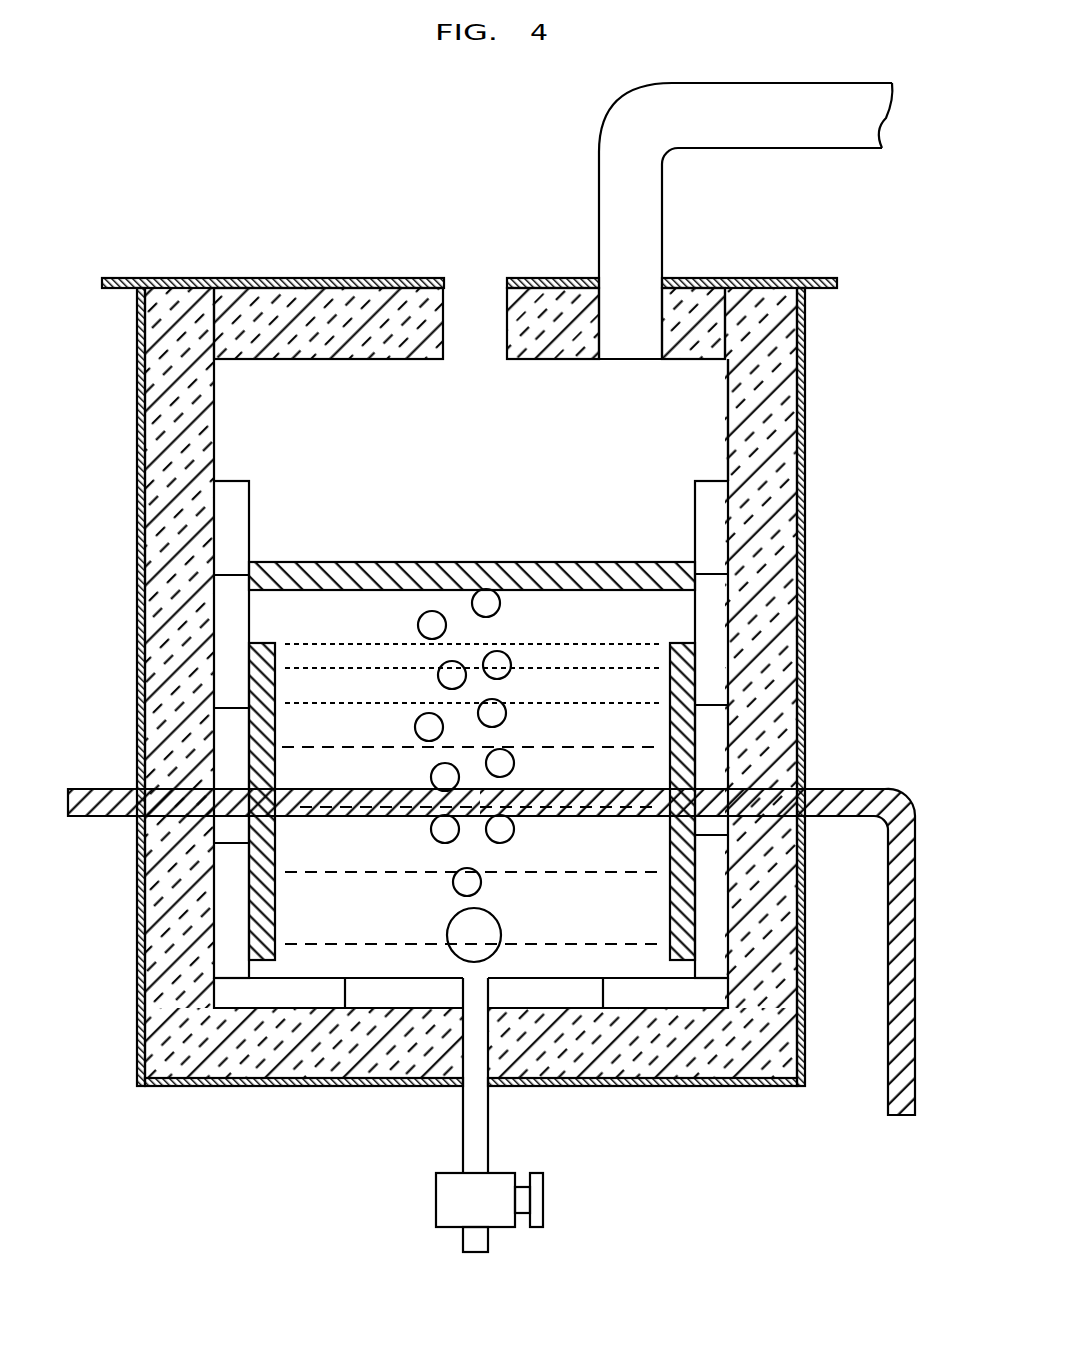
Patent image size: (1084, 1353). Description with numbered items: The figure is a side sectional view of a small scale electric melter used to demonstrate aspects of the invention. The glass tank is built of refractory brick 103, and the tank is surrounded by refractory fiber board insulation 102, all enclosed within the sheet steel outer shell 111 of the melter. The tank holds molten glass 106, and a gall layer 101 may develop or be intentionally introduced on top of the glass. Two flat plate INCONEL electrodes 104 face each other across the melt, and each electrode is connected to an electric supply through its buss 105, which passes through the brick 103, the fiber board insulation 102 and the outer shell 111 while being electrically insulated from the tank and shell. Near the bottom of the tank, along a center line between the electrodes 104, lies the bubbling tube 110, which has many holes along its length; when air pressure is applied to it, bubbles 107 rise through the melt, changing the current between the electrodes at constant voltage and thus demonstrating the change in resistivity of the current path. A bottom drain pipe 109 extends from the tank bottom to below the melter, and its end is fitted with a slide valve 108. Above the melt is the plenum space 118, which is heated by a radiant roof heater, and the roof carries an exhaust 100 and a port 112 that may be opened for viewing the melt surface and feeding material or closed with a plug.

The exhaust 100 is at (662, 225).
The gall layer 101 is at (592, 562).
The refractory fiber board insulation 102 is at (767, 560).
The refractory brick 103 is at (712, 643).
The flat plate INCONEL electrodes 104 is at (682, 748).
The buss 105 is at (905, 786).
The molten glass 106 is at (642, 897).
The bubbles 107 is at (514, 832).
The slide valve 108 is at (505, 1228).
The bottom drain pipe 109 is at (463, 1133).
The bubbling tube 110 is at (447, 923).
The outer shell 111 is at (287, 280).
The port 112 is at (507, 318).
The plenum space 118 is at (710, 437).